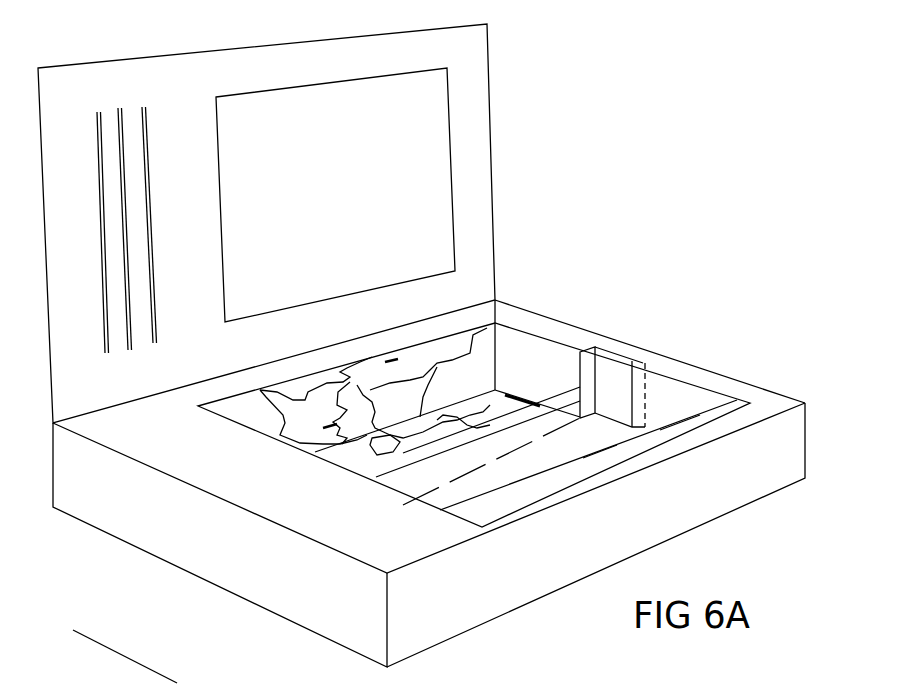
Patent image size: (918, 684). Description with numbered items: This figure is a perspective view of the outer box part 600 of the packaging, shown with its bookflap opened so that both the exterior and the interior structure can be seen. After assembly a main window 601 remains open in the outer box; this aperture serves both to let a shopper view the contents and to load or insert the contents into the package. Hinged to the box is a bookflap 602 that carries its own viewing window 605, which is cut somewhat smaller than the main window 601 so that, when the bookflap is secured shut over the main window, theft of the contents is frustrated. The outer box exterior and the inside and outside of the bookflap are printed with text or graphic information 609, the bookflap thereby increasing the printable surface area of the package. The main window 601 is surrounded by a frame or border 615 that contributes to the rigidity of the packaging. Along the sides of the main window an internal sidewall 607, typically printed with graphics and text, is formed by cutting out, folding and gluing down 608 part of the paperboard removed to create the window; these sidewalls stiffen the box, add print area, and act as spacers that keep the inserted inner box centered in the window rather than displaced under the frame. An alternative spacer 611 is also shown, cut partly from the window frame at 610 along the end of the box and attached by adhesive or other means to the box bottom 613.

The outer box part 600 is at (747, 500).
The main window 601 is at (553, 357).
The bookflap 602 is at (483, 51).
The viewing window 605 is at (440, 182).
The internal sidewall 607 is at (495, 407).
The folded and glued-down paperboard 608 is at (503, 393).
The text or graphic information 609 is at (164, 112).
The window frame at the end of the box 610 is at (613, 367).
The alternative spacer 611 is at (640, 392).
The box bottom 613 is at (643, 423).
The frame or border 615 is at (770, 408).